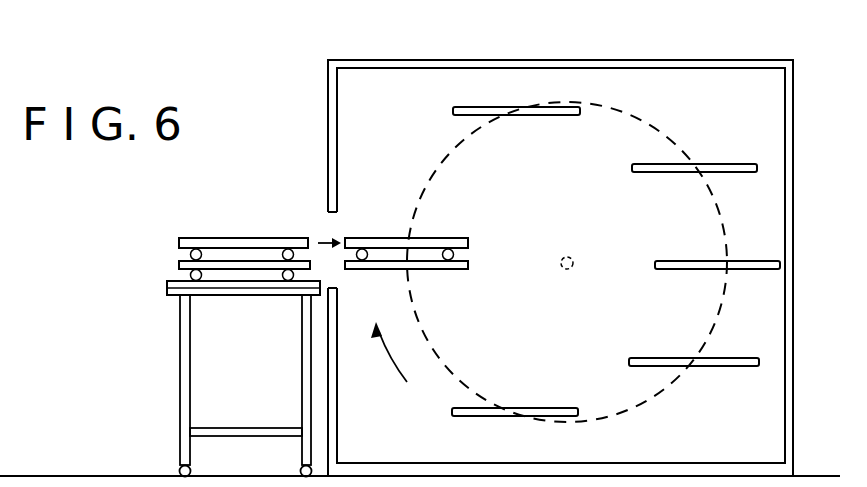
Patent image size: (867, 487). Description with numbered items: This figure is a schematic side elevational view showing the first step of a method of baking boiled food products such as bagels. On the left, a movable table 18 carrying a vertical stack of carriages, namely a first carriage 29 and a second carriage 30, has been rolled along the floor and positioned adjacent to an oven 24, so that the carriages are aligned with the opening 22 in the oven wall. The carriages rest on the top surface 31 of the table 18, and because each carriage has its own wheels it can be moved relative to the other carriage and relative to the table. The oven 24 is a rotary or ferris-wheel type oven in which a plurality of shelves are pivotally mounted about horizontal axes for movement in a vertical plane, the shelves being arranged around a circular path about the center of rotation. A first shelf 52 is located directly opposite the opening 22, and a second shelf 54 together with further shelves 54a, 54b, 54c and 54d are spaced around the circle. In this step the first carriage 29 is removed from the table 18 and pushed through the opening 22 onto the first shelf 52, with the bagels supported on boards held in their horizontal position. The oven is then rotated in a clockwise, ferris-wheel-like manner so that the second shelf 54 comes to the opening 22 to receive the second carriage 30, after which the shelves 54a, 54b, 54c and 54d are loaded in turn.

The table 18 is at (180, 362).
The opening 22 is at (340, 222).
The oven 24 is at (722, 50).
The first carriage 29 is at (208, 238).
The second carriage 30 is at (181, 263).
The top surface 31 is at (178, 297).
The first shelf 52 is at (420, 270).
The second shelf 54 is at (535, 408).
The shelf 54a is at (712, 358).
The shelf 54b is at (700, 261).
The shelf 54c is at (703, 164).
The shelf 54d is at (565, 108).